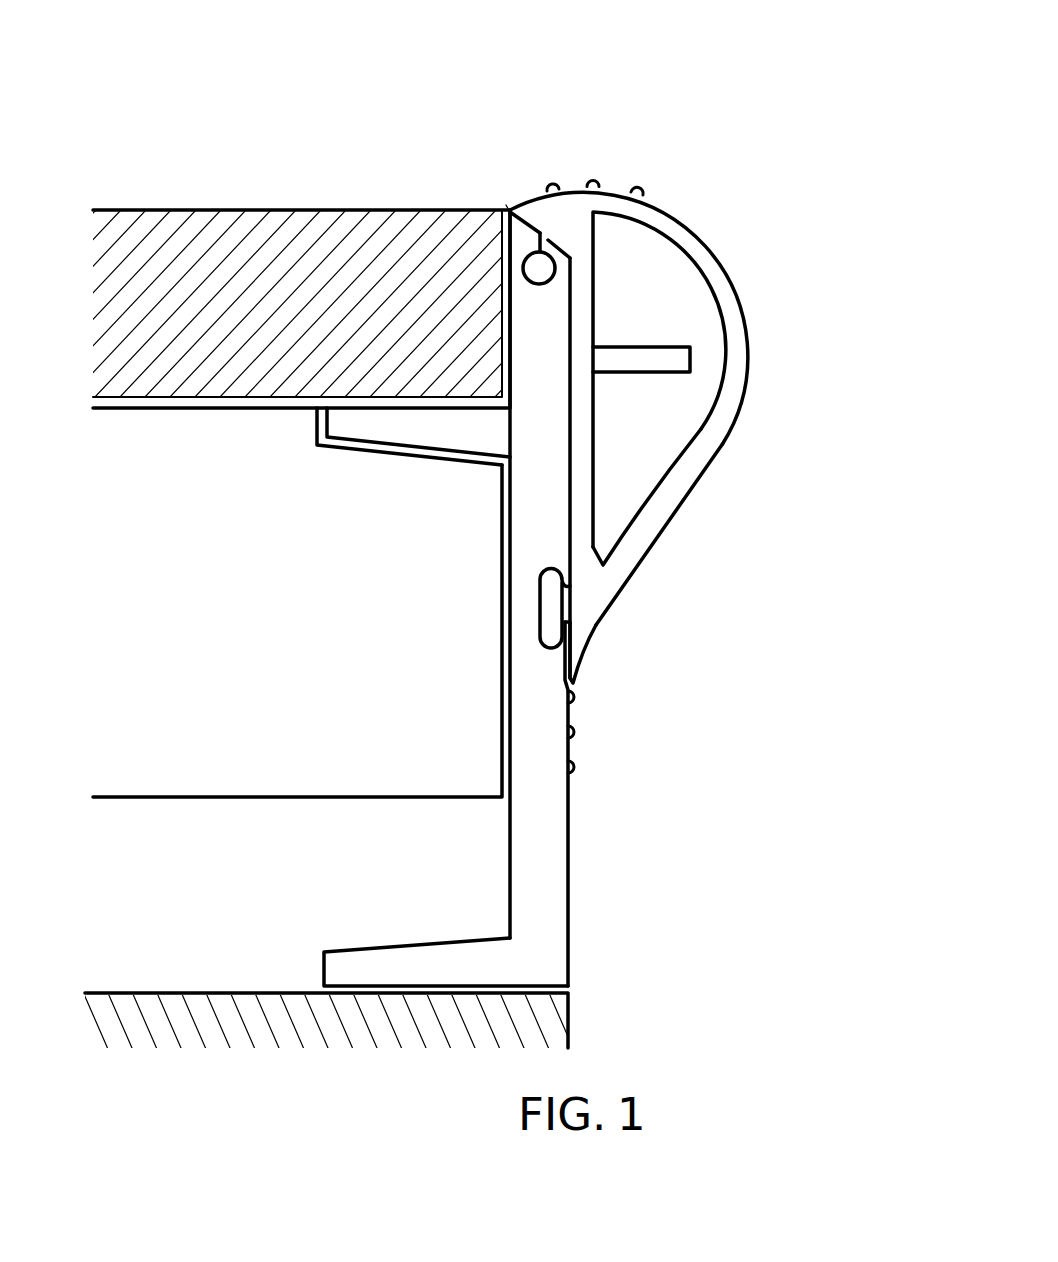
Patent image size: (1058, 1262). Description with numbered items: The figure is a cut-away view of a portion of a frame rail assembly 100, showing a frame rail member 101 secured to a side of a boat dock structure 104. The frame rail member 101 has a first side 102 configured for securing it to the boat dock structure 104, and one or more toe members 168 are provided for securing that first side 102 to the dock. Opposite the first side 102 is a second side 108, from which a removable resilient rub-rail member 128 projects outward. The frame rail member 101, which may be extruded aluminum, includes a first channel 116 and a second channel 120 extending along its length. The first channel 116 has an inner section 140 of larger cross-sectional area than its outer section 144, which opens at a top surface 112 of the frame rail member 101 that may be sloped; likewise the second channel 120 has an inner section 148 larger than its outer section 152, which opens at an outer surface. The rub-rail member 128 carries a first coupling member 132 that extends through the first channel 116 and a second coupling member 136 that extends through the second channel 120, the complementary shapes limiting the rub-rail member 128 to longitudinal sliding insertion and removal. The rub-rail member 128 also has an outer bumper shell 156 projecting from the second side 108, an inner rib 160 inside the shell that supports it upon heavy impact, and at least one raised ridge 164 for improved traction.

The frame rail assembly 100 is at (419, 528).
The frame rail member 101 is at (620, 939).
The first side 102 is at (506, 205).
The boat dock structure 104 is at (187, 150).
The second side 108 is at (604, 525).
The top surface 112 is at (674, 322).
The first channel 116 is at (528, 282).
The second channel 120 is at (551, 650).
The rub-rail member 128 is at (691, 563).
The first coupling member 132 is at (555, 268).
The second coupling member 136 is at (531, 582).
The inner section 140 is at (547, 283).
The outer section 144 is at (540, 243).
The inner section 148 is at (540, 622).
The outer section 152 is at (572, 680).
The outer bumper shell 156 is at (752, 340).
The inner rib 160 is at (642, 373).
The raised ridge 164 is at (594, 181).
The toe members 168 is at (343, 444).